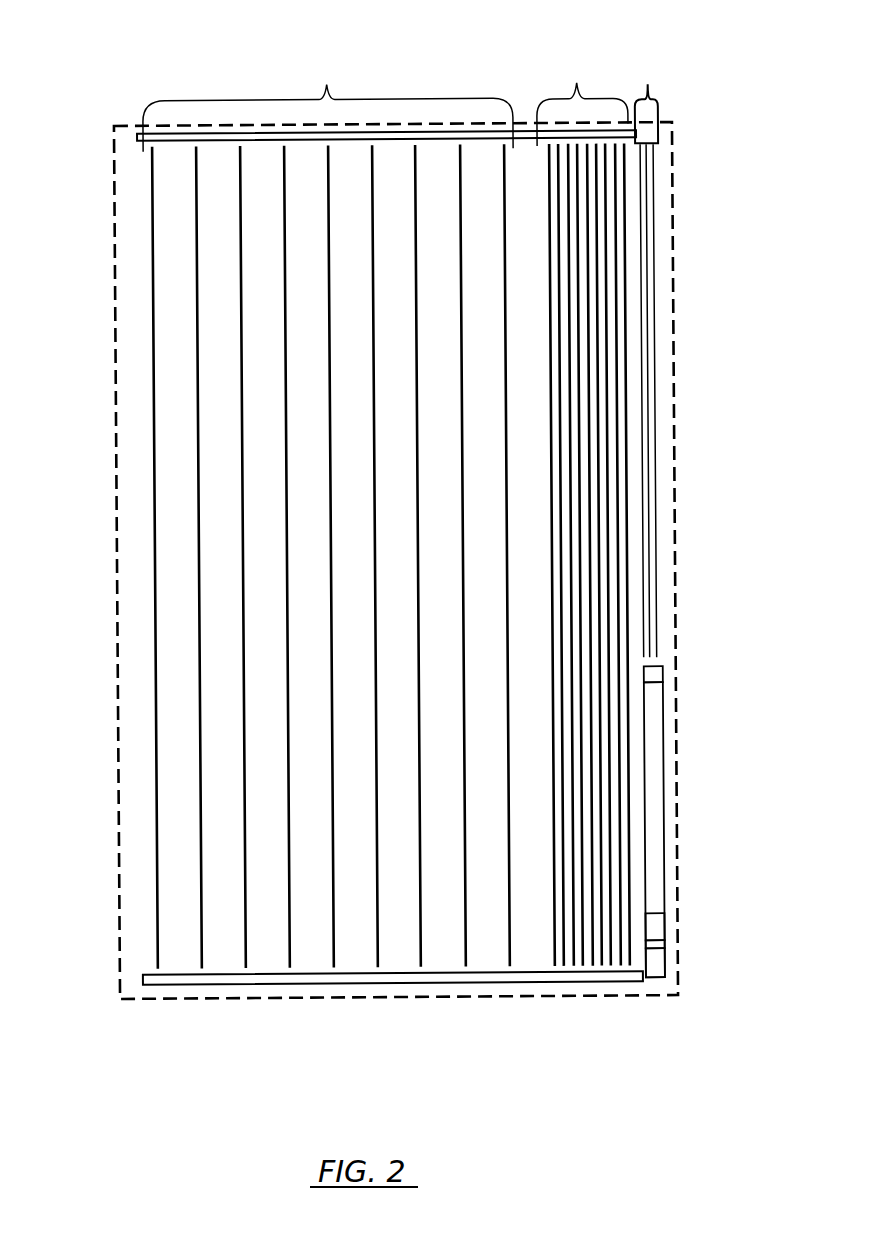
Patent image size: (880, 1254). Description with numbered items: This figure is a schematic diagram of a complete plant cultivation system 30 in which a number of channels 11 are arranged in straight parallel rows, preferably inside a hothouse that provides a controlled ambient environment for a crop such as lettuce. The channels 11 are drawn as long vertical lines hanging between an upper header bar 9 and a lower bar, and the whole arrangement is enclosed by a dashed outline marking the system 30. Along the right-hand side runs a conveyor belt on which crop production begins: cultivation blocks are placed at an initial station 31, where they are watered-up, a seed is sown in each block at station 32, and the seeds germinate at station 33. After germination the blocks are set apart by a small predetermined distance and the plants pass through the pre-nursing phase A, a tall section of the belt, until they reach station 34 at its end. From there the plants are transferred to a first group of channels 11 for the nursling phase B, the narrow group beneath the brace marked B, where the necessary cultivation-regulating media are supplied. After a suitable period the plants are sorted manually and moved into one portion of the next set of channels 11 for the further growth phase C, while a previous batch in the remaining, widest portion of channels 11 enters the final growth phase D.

The header bar 9 is at (528, 134).
The channels 11 is at (155, 489).
The plant cultivation system 30 is at (247, 1007).
The initial station 31 is at (653, 970).
The station 32 is at (655, 945).
The station 33 is at (655, 932).
The station 34 is at (652, 675).
The pre-nursing phase A is at (703, 843).
The nursling phase B is at (648, 355).
The further growth phase C is at (584, 509).
The final growth phase D is at (280, 510).